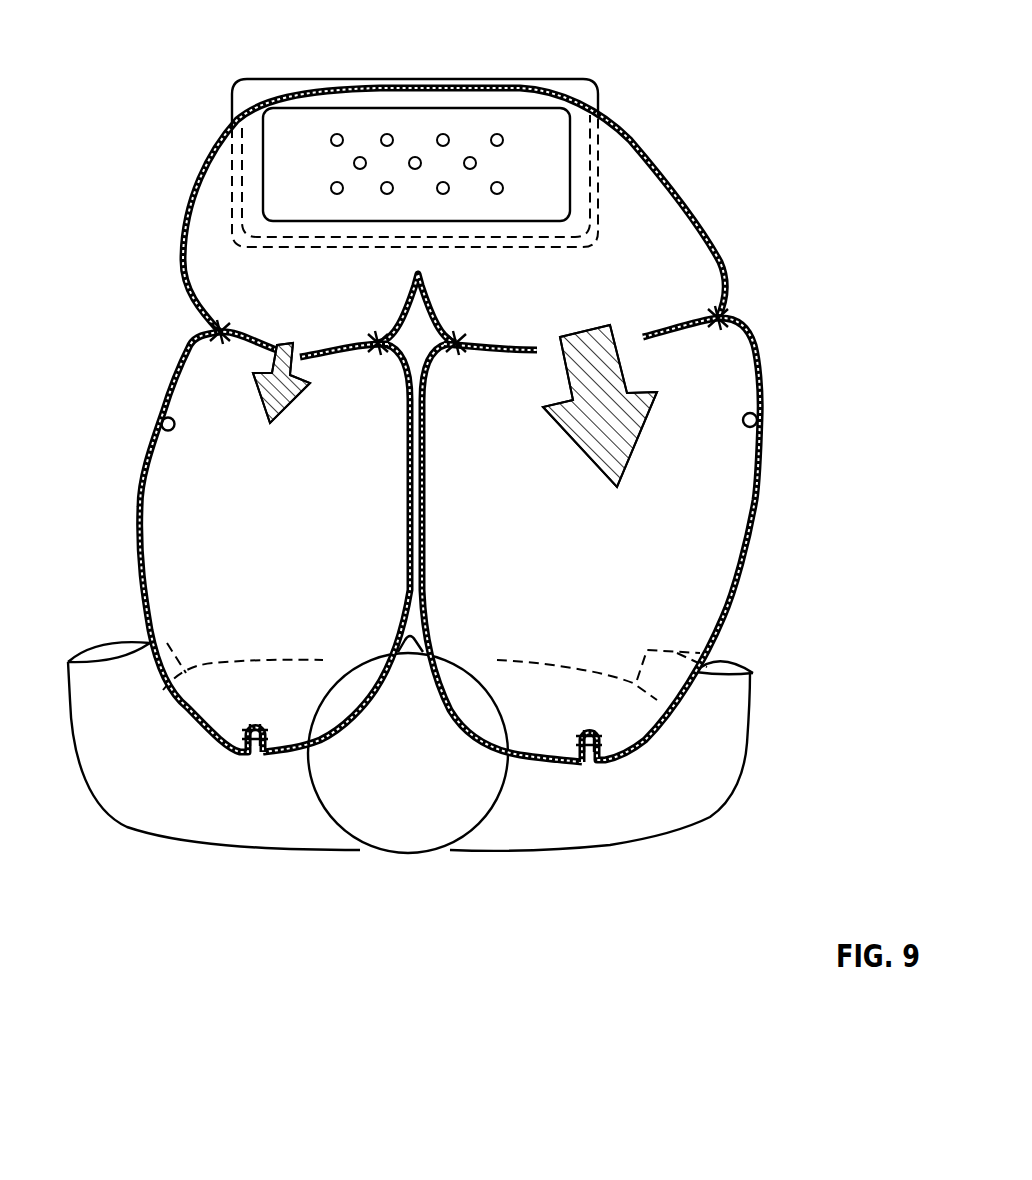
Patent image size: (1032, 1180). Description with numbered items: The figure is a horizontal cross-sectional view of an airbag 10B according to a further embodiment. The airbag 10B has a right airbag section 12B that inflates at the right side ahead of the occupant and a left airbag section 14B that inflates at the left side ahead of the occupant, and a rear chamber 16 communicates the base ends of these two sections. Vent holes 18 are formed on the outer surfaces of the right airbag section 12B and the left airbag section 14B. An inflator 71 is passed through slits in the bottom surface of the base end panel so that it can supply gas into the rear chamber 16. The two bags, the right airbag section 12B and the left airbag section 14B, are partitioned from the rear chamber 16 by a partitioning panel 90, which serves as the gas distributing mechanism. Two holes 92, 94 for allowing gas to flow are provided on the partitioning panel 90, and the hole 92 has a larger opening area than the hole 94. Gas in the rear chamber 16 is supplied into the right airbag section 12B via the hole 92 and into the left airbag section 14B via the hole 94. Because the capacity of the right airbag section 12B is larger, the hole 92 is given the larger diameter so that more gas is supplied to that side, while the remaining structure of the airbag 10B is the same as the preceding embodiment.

The airbag 10B is at (677, 110).
The rear chamber 16 is at (376, 297).
The inflator 71 is at (517, 137).
The left airbag section 14B is at (138, 507).
The right airbag section 12B is at (763, 477).
The vent holes 18 is at (160, 425).
The partitioning panel 90 is at (332, 357).
The hole 92 is at (545, 348).
The hole 94 is at (275, 343).